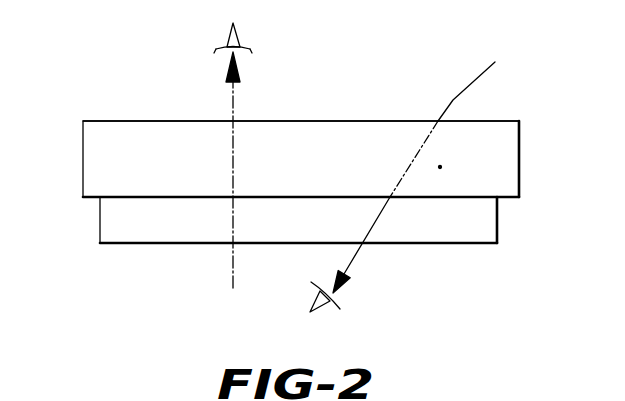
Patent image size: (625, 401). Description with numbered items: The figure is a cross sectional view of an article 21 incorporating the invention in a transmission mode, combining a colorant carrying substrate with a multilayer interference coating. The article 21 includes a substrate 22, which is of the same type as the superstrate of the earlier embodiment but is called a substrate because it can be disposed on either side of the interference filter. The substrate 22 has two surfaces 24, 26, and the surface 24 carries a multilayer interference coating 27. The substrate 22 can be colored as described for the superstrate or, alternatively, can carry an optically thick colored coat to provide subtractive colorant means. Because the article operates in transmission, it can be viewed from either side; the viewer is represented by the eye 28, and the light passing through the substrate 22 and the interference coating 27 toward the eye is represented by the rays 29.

The article 21 is at (78, 113).
The substrate 22 is at (89, 166).
The surface 24 is at (499, 205).
The surface 26 is at (475, 120).
The multilayer interference coating 27 is at (484, 237).
The eye 28 is at (224, 36).
The rays 29 is at (453, 100).